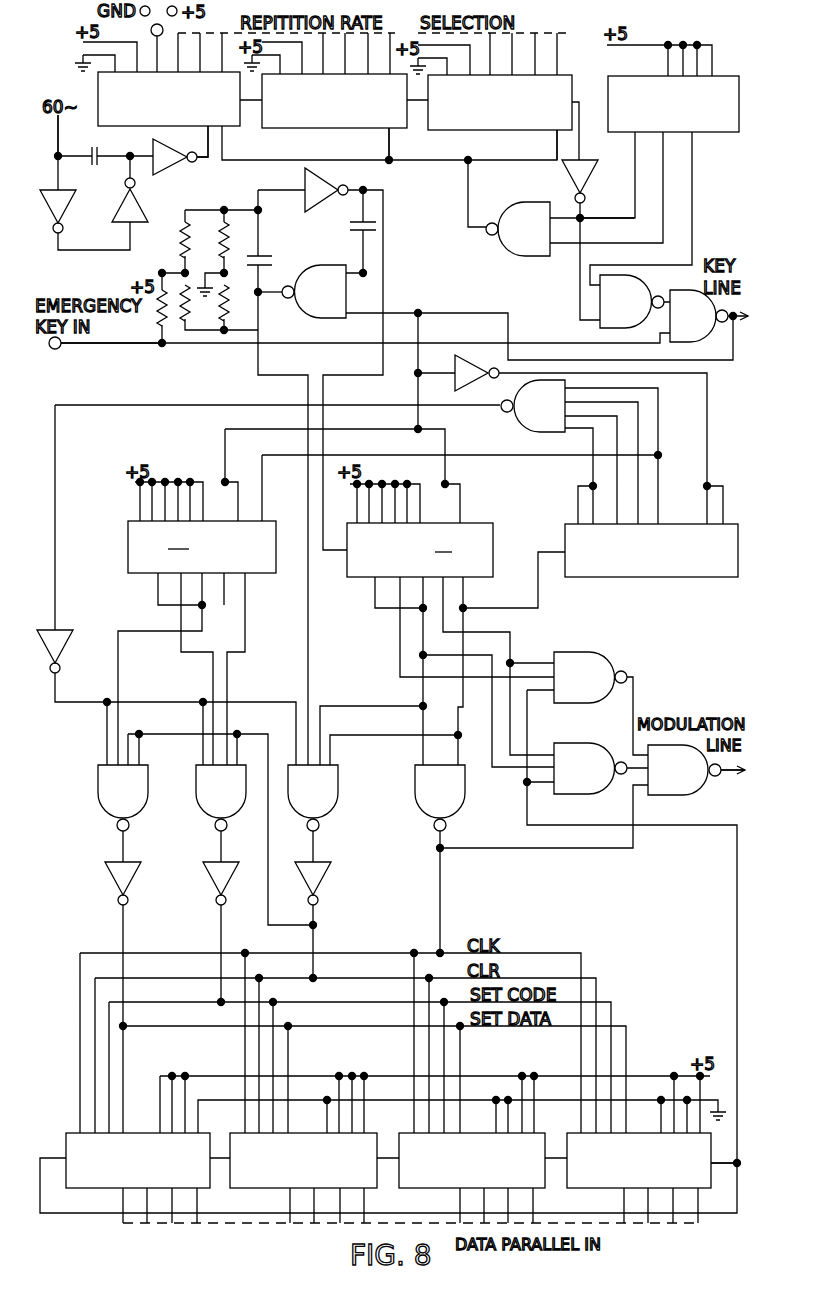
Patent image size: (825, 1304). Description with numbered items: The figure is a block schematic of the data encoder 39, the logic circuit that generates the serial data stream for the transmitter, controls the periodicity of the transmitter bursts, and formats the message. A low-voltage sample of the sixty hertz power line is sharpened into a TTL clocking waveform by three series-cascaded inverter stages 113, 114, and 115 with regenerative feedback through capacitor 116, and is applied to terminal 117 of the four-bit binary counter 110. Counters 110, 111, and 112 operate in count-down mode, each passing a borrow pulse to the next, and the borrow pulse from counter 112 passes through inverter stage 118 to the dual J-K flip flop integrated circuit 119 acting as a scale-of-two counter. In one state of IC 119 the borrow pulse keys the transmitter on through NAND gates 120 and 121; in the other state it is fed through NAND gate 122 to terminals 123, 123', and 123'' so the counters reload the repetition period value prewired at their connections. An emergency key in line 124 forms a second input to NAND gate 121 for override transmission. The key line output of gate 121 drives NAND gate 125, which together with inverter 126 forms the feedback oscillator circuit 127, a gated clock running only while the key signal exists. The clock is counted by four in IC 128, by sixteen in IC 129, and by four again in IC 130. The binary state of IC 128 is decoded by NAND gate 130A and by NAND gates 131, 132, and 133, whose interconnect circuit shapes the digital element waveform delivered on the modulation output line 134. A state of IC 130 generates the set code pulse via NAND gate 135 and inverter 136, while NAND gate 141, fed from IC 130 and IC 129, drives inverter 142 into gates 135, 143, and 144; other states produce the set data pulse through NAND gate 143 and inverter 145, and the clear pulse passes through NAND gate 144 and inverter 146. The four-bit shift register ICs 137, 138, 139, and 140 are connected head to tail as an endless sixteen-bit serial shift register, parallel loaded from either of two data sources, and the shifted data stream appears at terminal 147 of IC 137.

The binary counter 110 is at (186, 120).
The binary counter 111 is at (354, 121).
The binary counter 112 is at (527, 121).
The inverter stage 113 is at (66, 218).
The inverter stage 114 is at (140, 218).
The inverter stage 115 is at (168, 175).
The capacitor 116 is at (98, 162).
The terminal 117 is at (206, 148).
The inverter stage 118 is at (588, 186).
The integrated circuit 119 is at (686, 121).
The NAND gate 120 is at (652, 280).
The NAND gate 121 is at (686, 342).
The NAND gate 122 is at (505, 210).
The terminal 123 is at (389, 144).
The terminal 123' is at (418, 145).
The terminal 123'' is at (531, 145).
The emergency key in line 124 is at (63, 348).
The NAND gate 125 is at (332, 264).
The inverter 126 is at (332, 203).
The feedback oscillator circuit 127 is at (392, 209).
The integrated circuit 128 is at (470, 524).
The integrated circuit 129 is at (612, 580).
The integrated circuit 130 is at (262, 522).
The NAND gate 130A is at (466, 810).
The NAND gate 131 is at (570, 652).
The NAND gate 132 is at (570, 743).
The NAND gate 133 is at (655, 795).
The modulation output line 134 is at (735, 782).
The NAND gate 135 is at (200, 822).
The inverter 136 is at (214, 895).
The serial shift register IC 137 is at (632, 1166).
The serial shift register IC 138 is at (464, 1166).
The serial shift register IC 139 is at (294, 1166).
The serial shift register IC 140 is at (130, 1166).
The NAND gate 141 is at (528, 434).
The inverter 142 is at (60, 640).
The NAND gate 143 is at (157, 752).
The NAND gate 144 is at (336, 768).
The inverter 145 is at (140, 862).
The inverter 146 is at (325, 866).
The terminal 147 is at (716, 1168).
The data encoder 39 is at (228, 1238).